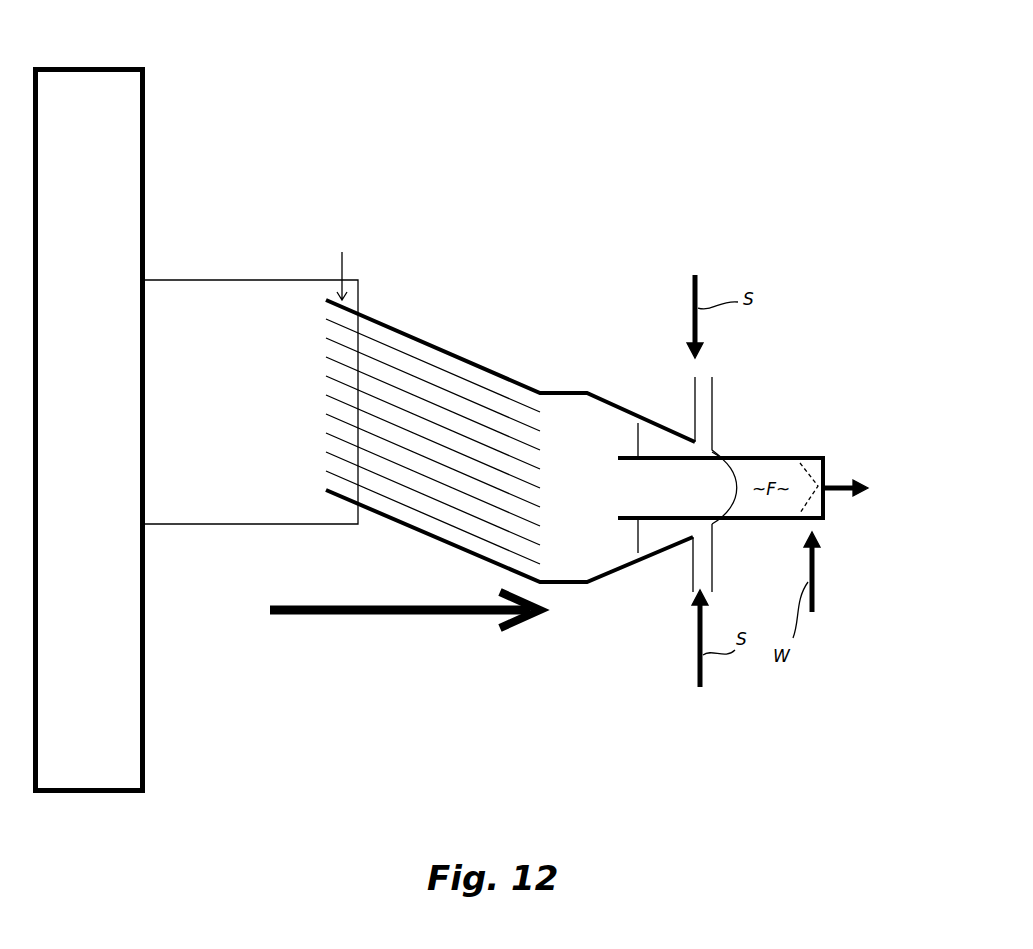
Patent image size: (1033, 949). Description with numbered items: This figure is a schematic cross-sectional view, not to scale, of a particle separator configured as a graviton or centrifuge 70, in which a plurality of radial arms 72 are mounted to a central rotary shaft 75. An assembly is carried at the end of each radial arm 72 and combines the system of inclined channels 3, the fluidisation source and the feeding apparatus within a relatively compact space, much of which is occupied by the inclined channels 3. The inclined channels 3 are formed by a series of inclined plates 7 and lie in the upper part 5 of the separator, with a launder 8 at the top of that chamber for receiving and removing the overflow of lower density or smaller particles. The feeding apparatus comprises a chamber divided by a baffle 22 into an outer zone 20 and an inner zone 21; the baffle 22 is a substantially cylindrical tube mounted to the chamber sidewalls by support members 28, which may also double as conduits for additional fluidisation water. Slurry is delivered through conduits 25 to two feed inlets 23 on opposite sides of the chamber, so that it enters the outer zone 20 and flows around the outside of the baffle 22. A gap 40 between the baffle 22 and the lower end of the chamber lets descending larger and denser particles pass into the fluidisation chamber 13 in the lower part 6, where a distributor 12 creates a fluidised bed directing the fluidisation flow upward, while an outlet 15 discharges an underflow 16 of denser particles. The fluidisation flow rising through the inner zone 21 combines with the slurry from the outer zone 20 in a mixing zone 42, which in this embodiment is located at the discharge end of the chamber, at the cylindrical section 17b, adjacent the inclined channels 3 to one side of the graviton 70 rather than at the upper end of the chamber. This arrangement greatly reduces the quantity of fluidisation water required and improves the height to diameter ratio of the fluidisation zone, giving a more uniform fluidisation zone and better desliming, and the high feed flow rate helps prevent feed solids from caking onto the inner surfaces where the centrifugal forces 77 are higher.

The graviton or centrifuge 70 is at (618, 168).
The central rotary shaft 75 is at (108, 157).
The radial arm 72 is at (228, 312).
The launder 8 is at (343, 265).
The inclined channels 3 is at (418, 393).
The upper part 5 is at (490, 370).
The inclined plates 7 is at (423, 478).
The mixing zone 42 is at (575, 488).
The baffle 22 is at (628, 450).
The outer zone 20 is at (660, 440).
The inner zone 21 is at (650, 486).
The conduits 25 is at (712, 392).
The feed inlets 23 is at (700, 440).
The gap 40 is at (730, 454).
The lower part 6 is at (778, 456).
The distributor 12 is at (826, 458).
The underflow 16 is at (838, 485).
The outlet 15 is at (828, 510).
The fluidisation chamber 13 is at (770, 518).
The support members 28 is at (638, 550).
The cylindrical section 17b is at (562, 585).
The centrifugal forces 77 is at (328, 605).